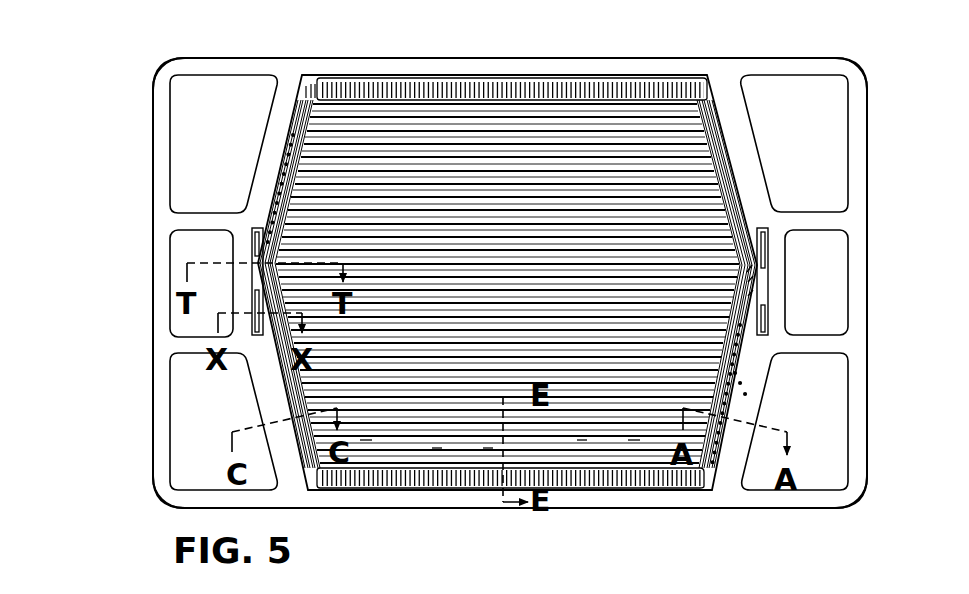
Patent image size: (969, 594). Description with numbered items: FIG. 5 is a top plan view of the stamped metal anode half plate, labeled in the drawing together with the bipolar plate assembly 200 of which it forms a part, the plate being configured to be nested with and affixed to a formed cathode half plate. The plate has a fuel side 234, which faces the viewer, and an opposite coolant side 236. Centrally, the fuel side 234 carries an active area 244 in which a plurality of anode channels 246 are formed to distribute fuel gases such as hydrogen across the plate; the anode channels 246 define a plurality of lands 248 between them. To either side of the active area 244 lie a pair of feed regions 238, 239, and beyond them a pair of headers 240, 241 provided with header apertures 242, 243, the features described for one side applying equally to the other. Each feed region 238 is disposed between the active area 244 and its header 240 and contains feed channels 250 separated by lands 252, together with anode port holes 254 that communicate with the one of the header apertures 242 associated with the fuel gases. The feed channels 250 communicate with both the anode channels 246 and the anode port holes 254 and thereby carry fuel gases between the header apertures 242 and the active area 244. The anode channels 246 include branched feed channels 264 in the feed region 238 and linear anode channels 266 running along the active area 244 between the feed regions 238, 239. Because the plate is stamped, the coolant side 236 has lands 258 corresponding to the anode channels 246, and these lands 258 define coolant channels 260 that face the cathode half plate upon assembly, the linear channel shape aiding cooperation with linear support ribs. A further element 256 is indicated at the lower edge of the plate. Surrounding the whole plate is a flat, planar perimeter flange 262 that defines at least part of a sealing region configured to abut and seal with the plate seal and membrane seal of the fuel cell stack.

The heat exchanger 200 is at (147, 425).
The fuel side 234 is at (352, 147).
The coolant side 236 is at (722, 95).
The feed region 238 is at (762, 226).
The feed region 239 is at (257, 340).
The header 240 is at (864, 303).
The header 241 is at (158, 268).
The header apertures 242 is at (849, 120).
The header apertures 243 is at (169, 140).
The active area 244 is at (553, 150).
The anode channels 246 is at (748, 296).
The lands 248 is at (592, 445).
The feed channels 250 is at (713, 148).
The lands 252 is at (725, 173).
The anode port holes 254 is at (745, 394).
The plate 256 is at (368, 442).
The lands 258 is at (488, 448).
The coolant channels 260 is at (437, 448).
The planar perimeter flange 262 is at (866, 88).
The branched feed channels 264 is at (775, 289).
The linear anode channels 266 is at (645, 445).